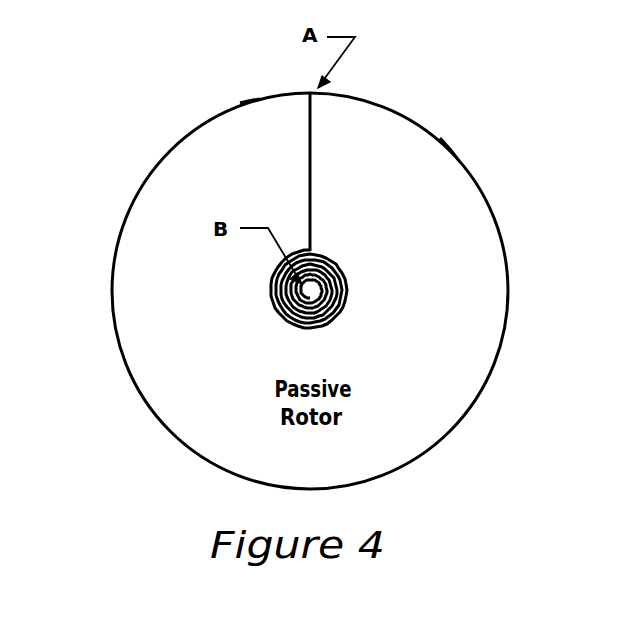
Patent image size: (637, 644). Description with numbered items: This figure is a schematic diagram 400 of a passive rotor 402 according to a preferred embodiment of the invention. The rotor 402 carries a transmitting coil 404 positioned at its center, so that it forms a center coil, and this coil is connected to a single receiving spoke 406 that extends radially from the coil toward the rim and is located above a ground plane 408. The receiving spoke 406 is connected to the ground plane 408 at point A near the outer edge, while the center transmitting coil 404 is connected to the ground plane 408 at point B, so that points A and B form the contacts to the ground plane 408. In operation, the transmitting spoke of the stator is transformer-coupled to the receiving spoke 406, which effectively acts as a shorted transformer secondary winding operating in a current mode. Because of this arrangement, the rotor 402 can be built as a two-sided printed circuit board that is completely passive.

The schematic diagram 400 is at (141, 86).
The passive rotor 402 is at (240, 103).
The transmitting coil 404 is at (352, 290).
The receiving spoke 406 is at (315, 200).
The ground plane 408 is at (430, 165).